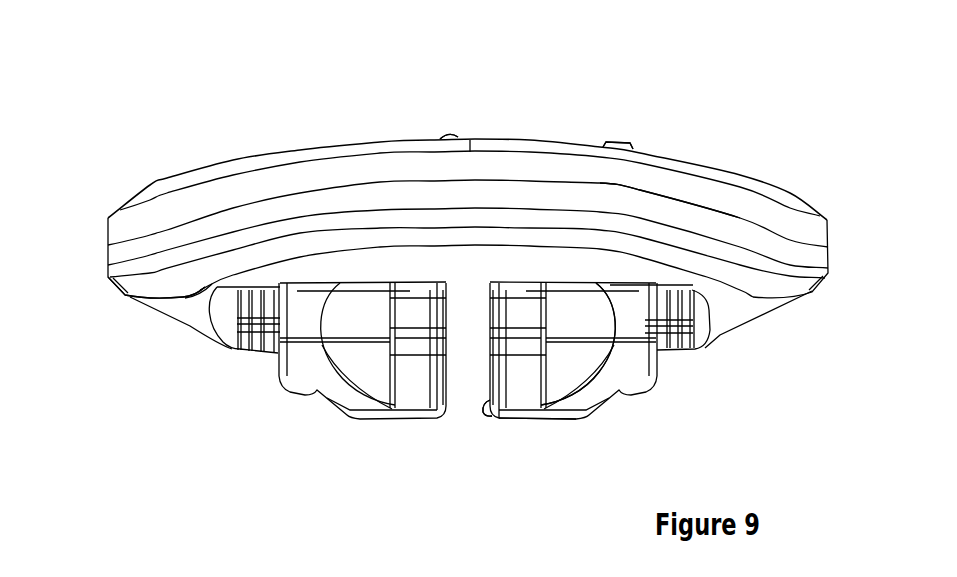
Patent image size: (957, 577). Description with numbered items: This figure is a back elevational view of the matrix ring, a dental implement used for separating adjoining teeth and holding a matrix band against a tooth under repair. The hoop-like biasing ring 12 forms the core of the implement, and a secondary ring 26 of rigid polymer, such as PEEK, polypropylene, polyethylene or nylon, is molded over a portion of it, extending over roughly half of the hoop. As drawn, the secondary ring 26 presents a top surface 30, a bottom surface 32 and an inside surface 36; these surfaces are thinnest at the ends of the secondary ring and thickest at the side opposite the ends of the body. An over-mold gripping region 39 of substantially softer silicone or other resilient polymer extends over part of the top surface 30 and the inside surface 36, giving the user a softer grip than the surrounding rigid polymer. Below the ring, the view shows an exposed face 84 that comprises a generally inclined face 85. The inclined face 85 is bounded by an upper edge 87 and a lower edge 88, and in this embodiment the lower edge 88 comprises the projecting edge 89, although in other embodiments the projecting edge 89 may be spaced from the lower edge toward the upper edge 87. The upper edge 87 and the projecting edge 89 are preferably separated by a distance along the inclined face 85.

The secondary ring 26 is at (375, 125).
The over-mold gripping region 39 is at (470, 138).
The top surface 30 is at (560, 141).
The inside surface 36 is at (658, 176).
The bottom surface 32 is at (168, 283).
The biasing ring 12 is at (190, 327).
The upper edge 87 is at (507, 400).
The lower edge 88 is at (487, 414).
The projecting edge 89 is at (402, 464).
The inclined face 85 is at (523, 413).
The exposed face 84 is at (505, 413).